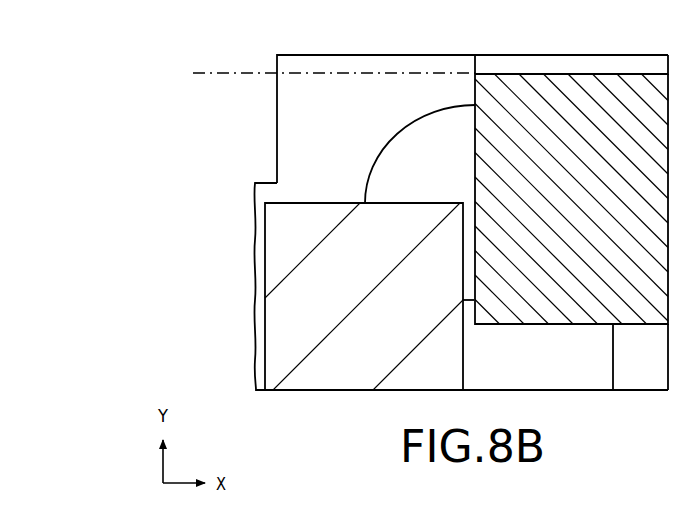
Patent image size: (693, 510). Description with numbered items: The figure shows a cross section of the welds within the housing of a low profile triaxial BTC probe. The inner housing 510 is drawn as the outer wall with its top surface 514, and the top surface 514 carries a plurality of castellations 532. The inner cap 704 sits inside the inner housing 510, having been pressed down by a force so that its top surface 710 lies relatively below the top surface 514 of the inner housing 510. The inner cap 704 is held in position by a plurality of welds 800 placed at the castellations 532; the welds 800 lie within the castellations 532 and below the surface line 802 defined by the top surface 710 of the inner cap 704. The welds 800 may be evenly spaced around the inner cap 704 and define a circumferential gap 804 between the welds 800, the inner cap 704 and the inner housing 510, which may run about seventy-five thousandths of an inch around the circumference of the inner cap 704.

The inner housing 510 is at (339, 301).
The top surface 514 is at (382, 55).
The castellations 532 is at (270, 146).
The inner cap 704 is at (559, 188).
The top surface 710 is at (622, 73).
The welds 800 is at (412, 178).
The surface line 802 is at (213, 72).
The circumferential gap 804 is at (471, 268).